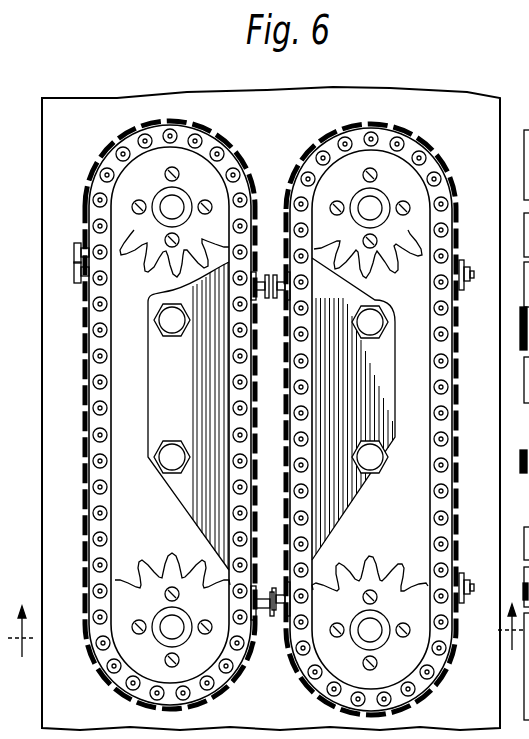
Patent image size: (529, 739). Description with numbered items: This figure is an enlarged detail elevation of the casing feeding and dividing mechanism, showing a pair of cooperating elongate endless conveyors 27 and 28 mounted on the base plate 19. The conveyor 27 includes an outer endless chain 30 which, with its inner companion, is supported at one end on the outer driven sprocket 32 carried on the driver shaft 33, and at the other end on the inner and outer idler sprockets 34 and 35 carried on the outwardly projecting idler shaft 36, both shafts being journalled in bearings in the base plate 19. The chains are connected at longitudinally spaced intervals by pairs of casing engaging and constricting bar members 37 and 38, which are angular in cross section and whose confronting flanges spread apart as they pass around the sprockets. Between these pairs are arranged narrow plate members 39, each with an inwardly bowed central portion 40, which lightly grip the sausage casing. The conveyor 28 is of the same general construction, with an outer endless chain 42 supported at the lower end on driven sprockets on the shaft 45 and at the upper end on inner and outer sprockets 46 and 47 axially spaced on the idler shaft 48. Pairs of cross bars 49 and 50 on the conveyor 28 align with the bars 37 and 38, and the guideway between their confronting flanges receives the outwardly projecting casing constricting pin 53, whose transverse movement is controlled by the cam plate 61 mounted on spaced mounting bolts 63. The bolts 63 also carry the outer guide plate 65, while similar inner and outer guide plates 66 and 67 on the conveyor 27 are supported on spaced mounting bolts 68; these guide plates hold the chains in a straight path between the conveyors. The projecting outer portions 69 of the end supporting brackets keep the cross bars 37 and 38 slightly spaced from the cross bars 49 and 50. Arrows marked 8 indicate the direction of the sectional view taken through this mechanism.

The section line 8- 8 is at (267, 640).
The base plate 19 is at (487, 100).
The endless conveyor 27 is at (188, 130).
The endless conveyor 28 is at (400, 137).
The outer endless chain 30 is at (98, 473).
The outer driven sprocket 32 is at (195, 662).
The driver shaft 33 is at (170, 628).
The inner idler sprocket 34 is at (158, 283).
The outer idler sprocket 35 is at (118, 210).
The idler shaft 36 is at (170, 205).
The casing engaging and constricting bar member 37 is at (83, 248).
The casing engaging and constricting bar member 38 is at (83, 265).
The plate member 39 is at (84, 365).
The inwardly bowed central portion 40 is at (420, 638).
The outer endless chain 42 is at (442, 432).
The shaft 45 is at (372, 625).
The inner sprocket 46 is at (392, 282).
The outer sprocket 47 is at (418, 215).
The idler shaft 48 is at (378, 205).
The casing engaging and constricting cross bar 49 is at (460, 292).
The casing engaging and constricting cross bar 50 is at (462, 262).
The casing constricting pin 53 is at (470, 277).
The cam plate 61 is at (396, 398).
The mounting bolt 63 is at (372, 338).
The outer guide plate 65 is at (388, 460).
The inner guide plate 66 is at (152, 390).
The outer guide plate 67 is at (172, 410).
The mounting bolt 68 is at (176, 336).
The projecting outer portion 69 is at (528, 278).